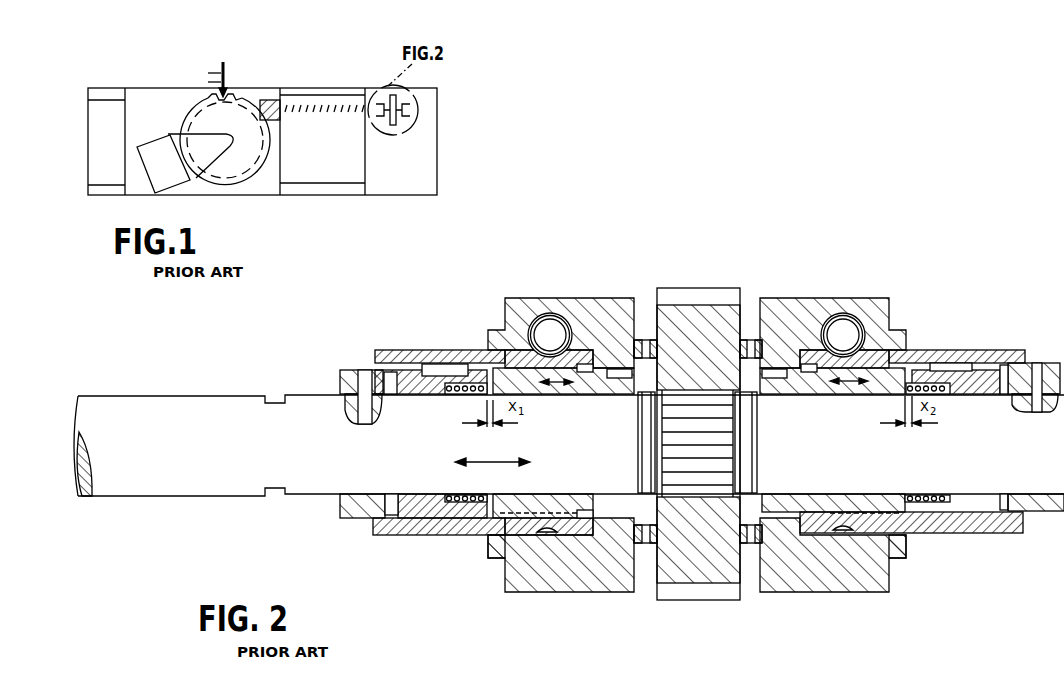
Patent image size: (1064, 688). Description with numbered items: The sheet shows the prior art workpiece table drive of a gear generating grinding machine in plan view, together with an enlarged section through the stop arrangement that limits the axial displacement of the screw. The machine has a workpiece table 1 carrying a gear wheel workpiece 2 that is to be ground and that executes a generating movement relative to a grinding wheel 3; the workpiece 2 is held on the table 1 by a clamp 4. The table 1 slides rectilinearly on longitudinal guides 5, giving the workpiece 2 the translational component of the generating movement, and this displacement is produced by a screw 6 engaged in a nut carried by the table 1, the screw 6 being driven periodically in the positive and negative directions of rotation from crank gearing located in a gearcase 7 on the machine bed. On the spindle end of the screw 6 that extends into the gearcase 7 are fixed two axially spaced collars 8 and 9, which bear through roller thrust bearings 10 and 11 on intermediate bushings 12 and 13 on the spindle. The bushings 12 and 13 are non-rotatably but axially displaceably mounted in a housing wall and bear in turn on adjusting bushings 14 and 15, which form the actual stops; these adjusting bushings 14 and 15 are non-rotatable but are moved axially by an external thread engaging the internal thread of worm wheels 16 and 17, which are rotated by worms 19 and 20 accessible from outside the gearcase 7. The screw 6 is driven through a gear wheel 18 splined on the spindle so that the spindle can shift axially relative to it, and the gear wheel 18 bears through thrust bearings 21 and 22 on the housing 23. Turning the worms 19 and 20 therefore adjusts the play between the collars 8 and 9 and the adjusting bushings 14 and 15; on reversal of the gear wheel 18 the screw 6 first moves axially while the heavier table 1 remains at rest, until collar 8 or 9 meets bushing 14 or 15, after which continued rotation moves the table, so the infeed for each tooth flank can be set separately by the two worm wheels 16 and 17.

In FIG. 1, the workpiece table 1 is at (270, 98).
In FIG. 1, the gear wheel workpiece 2 is at (232, 97).
In FIG. 1, the grinding wheel 3 is at (221, 64).
In FIG. 1, the clamp 4 is at (158, 155).
In FIG. 1, the longitudinal guides 5 is at (312, 95).
In FIG. 1, the screw 6 is at (337, 108).
In FIG. 2, the screw 6 is at (308, 477).
In FIG. 1, the gearcase 7 is at (418, 135).
In FIG. 2, the collar 8 is at (352, 510).
In FIG. 2, the collar 9 is at (1048, 368).
In FIG. 2, the roller thrust bearing 10 is at (392, 505).
In FIG. 2, the roller thrust bearing 11 is at (1007, 507).
In FIG. 2, the intermediate bushing 12 is at (427, 507).
In FIG. 2, the intermediate bushing 13 is at (970, 500).
In FIG. 2, the adjusting bushing 14 is at (535, 502).
In FIG. 2, the adjusting bushing 15 is at (832, 502).
In FIG. 2, the worm wheel 16 is at (575, 525).
In FIG. 2, the worm wheel 17 is at (878, 525).
In FIG. 2, the gear wheel 18 is at (698, 565).
In FIG. 2, the worm 19 is at (552, 332).
In FIG. 2, the worm 20 is at (841, 332).
In FIG. 2, the thrust bearing 21 is at (647, 530).
In FIG. 2, the thrust bearing 22 is at (750, 540).
In FIG. 2, the housing 23 is at (608, 560).